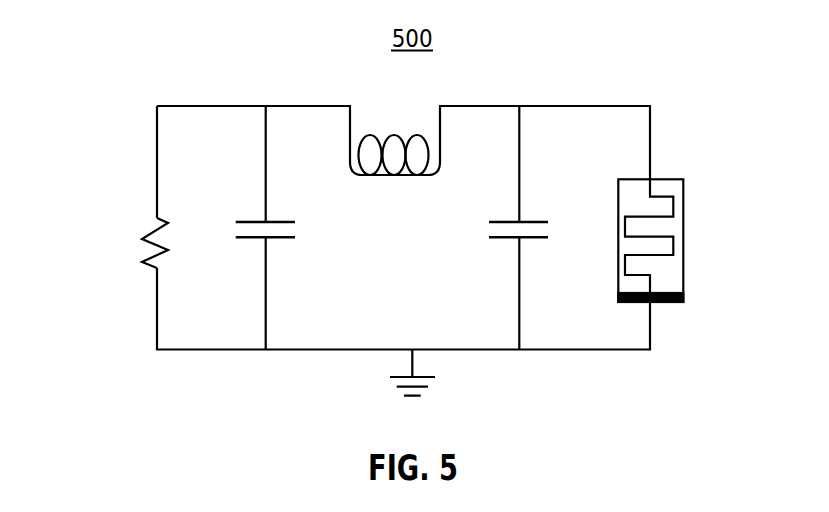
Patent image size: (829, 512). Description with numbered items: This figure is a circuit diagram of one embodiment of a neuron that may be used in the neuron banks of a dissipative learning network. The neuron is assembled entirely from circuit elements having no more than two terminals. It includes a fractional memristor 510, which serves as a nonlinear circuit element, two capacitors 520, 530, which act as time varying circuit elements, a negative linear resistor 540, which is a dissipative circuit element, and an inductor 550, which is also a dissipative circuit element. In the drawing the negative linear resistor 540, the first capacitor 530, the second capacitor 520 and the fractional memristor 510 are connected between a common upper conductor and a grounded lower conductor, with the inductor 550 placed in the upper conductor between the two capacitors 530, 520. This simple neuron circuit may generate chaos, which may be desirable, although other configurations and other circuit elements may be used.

The fractional memristor 510 is at (682, 195).
The capacitor 520 is at (529, 205).
The capacitor 530 is at (280, 247).
The negative linear resistor 540 is at (141, 227).
The inductor 550 is at (403, 182).